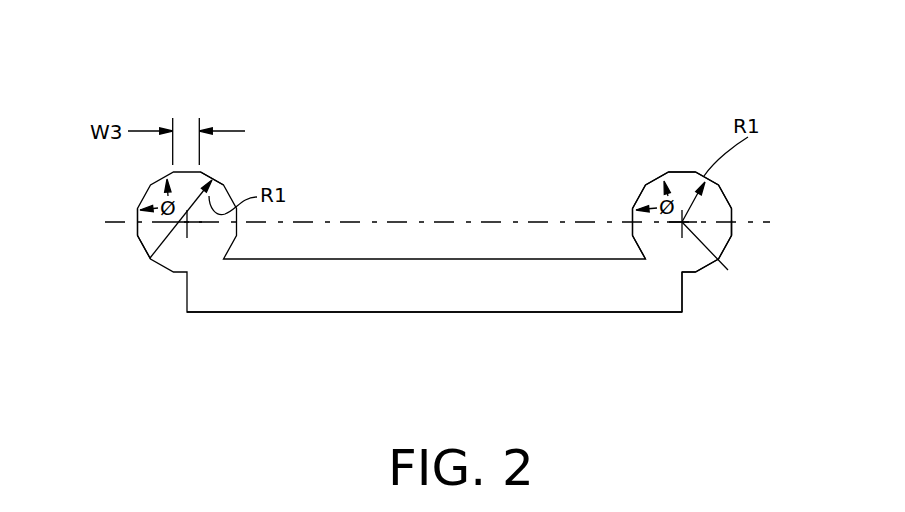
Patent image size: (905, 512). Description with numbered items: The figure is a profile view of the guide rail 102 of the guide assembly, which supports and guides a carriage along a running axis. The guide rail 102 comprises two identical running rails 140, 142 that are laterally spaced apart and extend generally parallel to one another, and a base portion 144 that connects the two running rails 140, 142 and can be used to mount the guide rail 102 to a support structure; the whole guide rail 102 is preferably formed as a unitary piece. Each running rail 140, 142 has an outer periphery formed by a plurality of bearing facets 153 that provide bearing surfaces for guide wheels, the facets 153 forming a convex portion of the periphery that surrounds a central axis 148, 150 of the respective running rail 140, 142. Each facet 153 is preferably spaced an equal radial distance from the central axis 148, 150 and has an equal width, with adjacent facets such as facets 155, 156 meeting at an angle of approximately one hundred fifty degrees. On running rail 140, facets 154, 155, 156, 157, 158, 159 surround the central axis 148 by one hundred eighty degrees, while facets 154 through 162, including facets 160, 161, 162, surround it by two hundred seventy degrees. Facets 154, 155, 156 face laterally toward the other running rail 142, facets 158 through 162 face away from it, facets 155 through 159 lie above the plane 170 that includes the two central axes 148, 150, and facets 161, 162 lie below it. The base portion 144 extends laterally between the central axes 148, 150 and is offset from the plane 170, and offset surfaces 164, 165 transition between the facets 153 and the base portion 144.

The guide rail 102 is at (534, 104).
The running rail 140 is at (725, 213).
The running rail 142 is at (152, 232).
The base portion 144 is at (385, 297).
The central axis 148 is at (720, 262).
The central axis 150 is at (150, 258).
The facets 153 is at (229, 190).
The facet 154 is at (632, 218).
The facet 155 is at (636, 197).
The facet 156 is at (660, 173).
The facet 157 is at (689, 171).
The facet 158 is at (712, 178).
The facet 159 is at (727, 197).
The facet 160 is at (733, 230).
The facet 161 is at (725, 248).
The facet 162 is at (700, 267).
The offset surface 164 is at (693, 275).
The offset surface 165 is at (633, 255).
The plane 170 is at (113, 222).